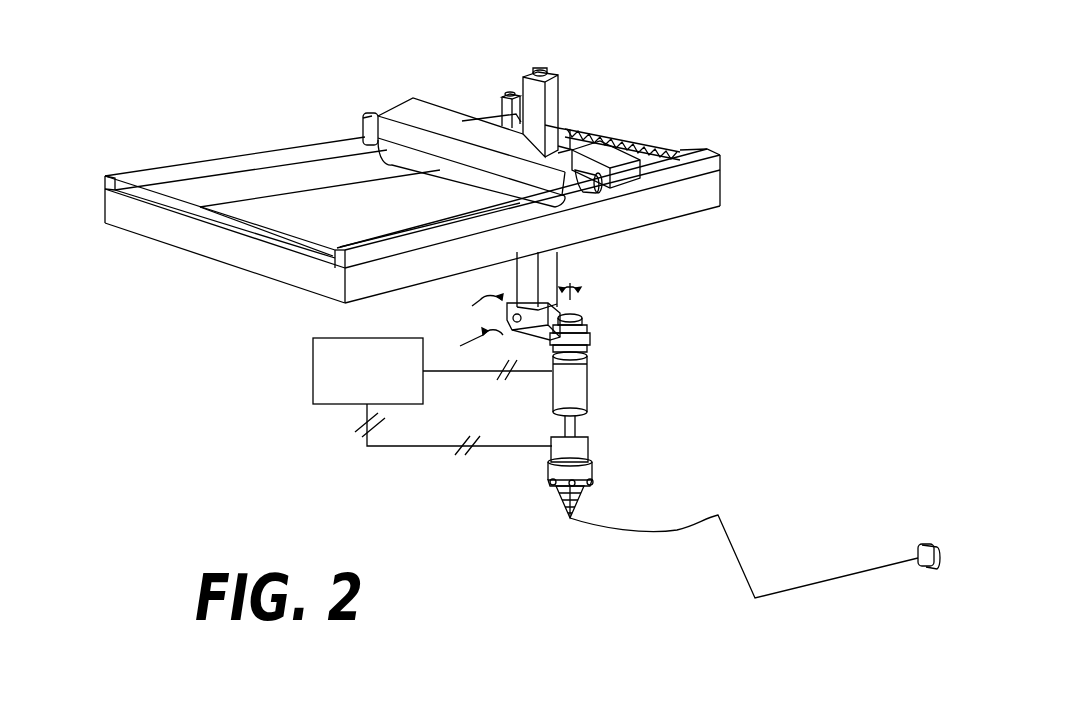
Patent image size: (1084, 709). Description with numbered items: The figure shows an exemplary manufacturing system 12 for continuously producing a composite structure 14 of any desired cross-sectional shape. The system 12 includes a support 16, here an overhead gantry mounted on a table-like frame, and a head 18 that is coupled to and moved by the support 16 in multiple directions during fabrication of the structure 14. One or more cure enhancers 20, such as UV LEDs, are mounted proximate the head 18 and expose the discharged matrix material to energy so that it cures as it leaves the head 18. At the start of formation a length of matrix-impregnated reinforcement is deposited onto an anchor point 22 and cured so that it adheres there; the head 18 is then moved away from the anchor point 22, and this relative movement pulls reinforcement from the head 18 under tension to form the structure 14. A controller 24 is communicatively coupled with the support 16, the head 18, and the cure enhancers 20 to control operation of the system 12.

The system 12 is at (177, 105).
The composite structure 14 is at (718, 515).
The support 16 is at (703, 195).
The head 18 is at (573, 450).
The cure enhancer 20 is at (557, 476).
The anchor point 22 is at (922, 542).
The controller 24 is at (377, 383).